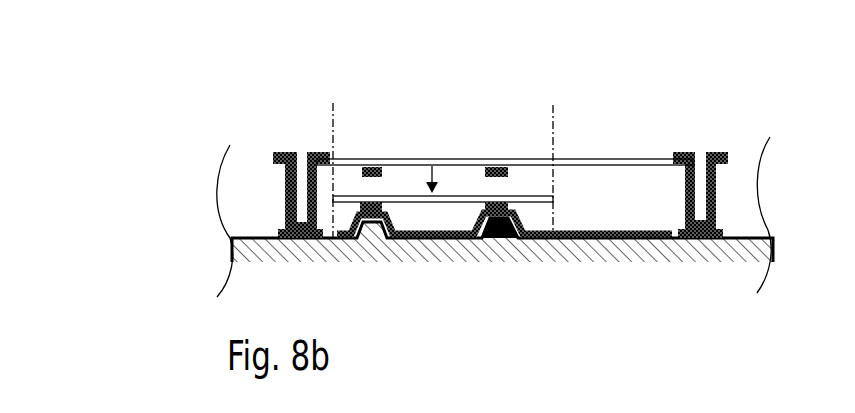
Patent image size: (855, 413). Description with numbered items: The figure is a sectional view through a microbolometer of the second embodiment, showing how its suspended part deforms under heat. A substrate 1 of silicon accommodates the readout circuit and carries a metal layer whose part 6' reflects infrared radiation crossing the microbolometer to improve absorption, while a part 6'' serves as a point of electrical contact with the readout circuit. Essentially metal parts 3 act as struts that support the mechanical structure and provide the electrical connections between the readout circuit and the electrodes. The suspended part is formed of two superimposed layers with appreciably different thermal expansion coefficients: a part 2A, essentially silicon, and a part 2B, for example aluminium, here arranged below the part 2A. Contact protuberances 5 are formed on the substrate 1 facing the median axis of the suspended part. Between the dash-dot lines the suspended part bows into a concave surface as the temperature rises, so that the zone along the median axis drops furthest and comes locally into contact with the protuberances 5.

The substrate 1 is at (407, 256).
The part of the suspended part 2A is at (393, 157).
The part of the suspended part 2B is at (497, 158).
The parts associated with second apertures 3 is at (326, 210).
The contact protuberances 5 is at (498, 238).
The reflecting part of metal layer 6' is at (504, 281).
The contact part of metal layer 6'' is at (723, 296).